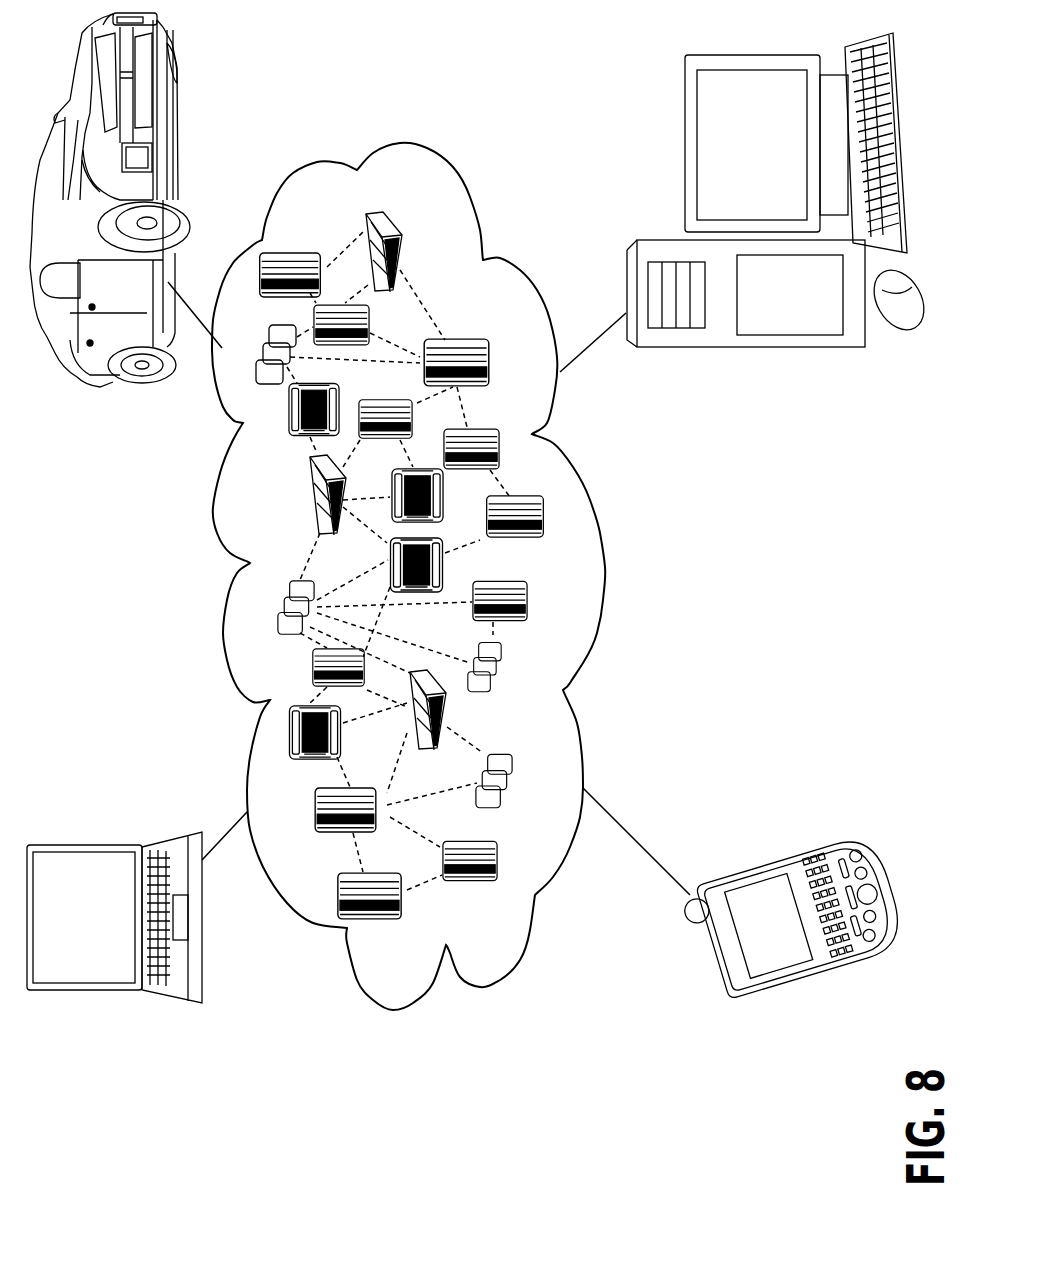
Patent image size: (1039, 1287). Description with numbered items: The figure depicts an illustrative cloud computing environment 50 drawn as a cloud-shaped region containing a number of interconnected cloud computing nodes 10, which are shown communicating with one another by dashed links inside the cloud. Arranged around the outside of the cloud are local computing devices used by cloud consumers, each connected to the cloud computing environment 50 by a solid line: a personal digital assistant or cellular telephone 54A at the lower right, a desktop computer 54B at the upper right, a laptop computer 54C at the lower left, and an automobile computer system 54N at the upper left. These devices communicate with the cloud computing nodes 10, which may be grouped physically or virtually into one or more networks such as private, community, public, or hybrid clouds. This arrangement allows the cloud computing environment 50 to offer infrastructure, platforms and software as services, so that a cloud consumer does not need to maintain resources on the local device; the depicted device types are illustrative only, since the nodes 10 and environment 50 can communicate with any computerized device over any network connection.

The cloud computing environment 50 is at (382, 148).
The cloud computing node 10 is at (416, 195).
The personal digital assistant or cellular telephone 54A is at (784, 857).
The desktop computer 54B is at (684, 150).
The laptop computer 54C is at (92, 843).
The automobile computer system 54N is at (111, 386).